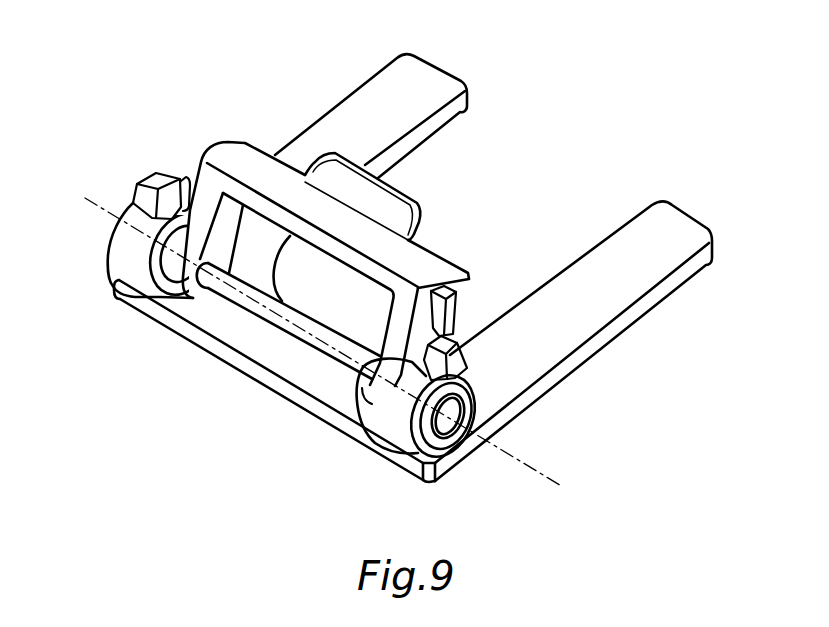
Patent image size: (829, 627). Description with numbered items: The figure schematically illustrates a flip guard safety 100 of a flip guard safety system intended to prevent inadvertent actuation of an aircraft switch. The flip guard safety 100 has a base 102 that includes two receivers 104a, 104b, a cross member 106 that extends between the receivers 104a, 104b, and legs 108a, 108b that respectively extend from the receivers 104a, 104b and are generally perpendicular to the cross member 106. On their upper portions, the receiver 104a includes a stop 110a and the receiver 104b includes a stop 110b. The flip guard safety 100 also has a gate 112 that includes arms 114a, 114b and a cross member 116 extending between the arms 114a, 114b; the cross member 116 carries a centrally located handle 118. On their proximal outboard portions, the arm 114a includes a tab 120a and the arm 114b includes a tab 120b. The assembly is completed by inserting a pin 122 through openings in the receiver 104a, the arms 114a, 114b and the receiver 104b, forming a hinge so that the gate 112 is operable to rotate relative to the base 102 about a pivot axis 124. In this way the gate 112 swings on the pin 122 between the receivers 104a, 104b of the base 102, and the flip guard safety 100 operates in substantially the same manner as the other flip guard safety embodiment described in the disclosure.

The flip guard safety 100 is at (588, 106).
The base 102 is at (612, 263).
The receiver 104a is at (123, 244).
The receiver 104b is at (407, 430).
The cross member 106 is at (273, 379).
The leg 108a is at (427, 74).
The leg 108b is at (670, 223).
The stop 110a is at (157, 172).
The stop 110b is at (457, 360).
The gate 112 is at (420, 252).
The arm 114a is at (153, 297).
The arm 114b is at (364, 404).
The cross member 116 is at (243, 150).
The handle 118 is at (398, 196).
The tab 120a is at (190, 178).
The tab 120b is at (450, 323).
The pin 122 is at (267, 317).
The pivot axis 124 is at (563, 486).